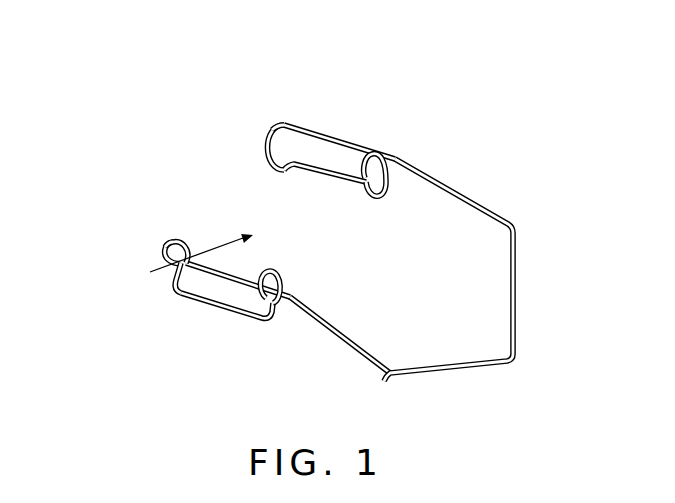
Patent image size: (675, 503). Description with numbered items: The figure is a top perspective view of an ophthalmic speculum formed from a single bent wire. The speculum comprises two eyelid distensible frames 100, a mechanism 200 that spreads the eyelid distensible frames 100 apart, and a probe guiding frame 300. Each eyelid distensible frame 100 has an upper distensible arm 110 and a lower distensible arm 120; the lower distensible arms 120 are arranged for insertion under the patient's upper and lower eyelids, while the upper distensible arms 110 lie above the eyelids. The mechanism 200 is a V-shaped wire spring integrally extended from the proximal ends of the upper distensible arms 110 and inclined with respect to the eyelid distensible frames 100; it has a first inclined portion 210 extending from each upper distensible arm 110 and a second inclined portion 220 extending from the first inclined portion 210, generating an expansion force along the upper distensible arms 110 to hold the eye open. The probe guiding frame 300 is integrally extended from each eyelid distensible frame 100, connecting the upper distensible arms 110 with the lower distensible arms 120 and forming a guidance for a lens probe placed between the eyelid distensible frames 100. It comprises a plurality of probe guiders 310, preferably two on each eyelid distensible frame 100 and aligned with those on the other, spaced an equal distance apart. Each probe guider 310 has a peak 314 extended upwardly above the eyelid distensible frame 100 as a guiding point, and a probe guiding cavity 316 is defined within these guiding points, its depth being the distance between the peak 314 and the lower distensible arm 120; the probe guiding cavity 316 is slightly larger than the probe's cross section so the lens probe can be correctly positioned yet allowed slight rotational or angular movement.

The eyelid distensible frame 100 is at (230, 220).
The upper distensible arm 110 is at (320, 138).
The lower distensible arm 120 is at (343, 172).
The mechanism 200 is at (453, 278).
The first inclined portion 210 is at (405, 157).
The second inclined portion 220 is at (482, 323).
The probe guiding frame 300 is at (230, 211).
The probe guider 310 is at (268, 153).
The peak 314 is at (266, 115).
The probe guiding cavity 316 is at (183, 263).